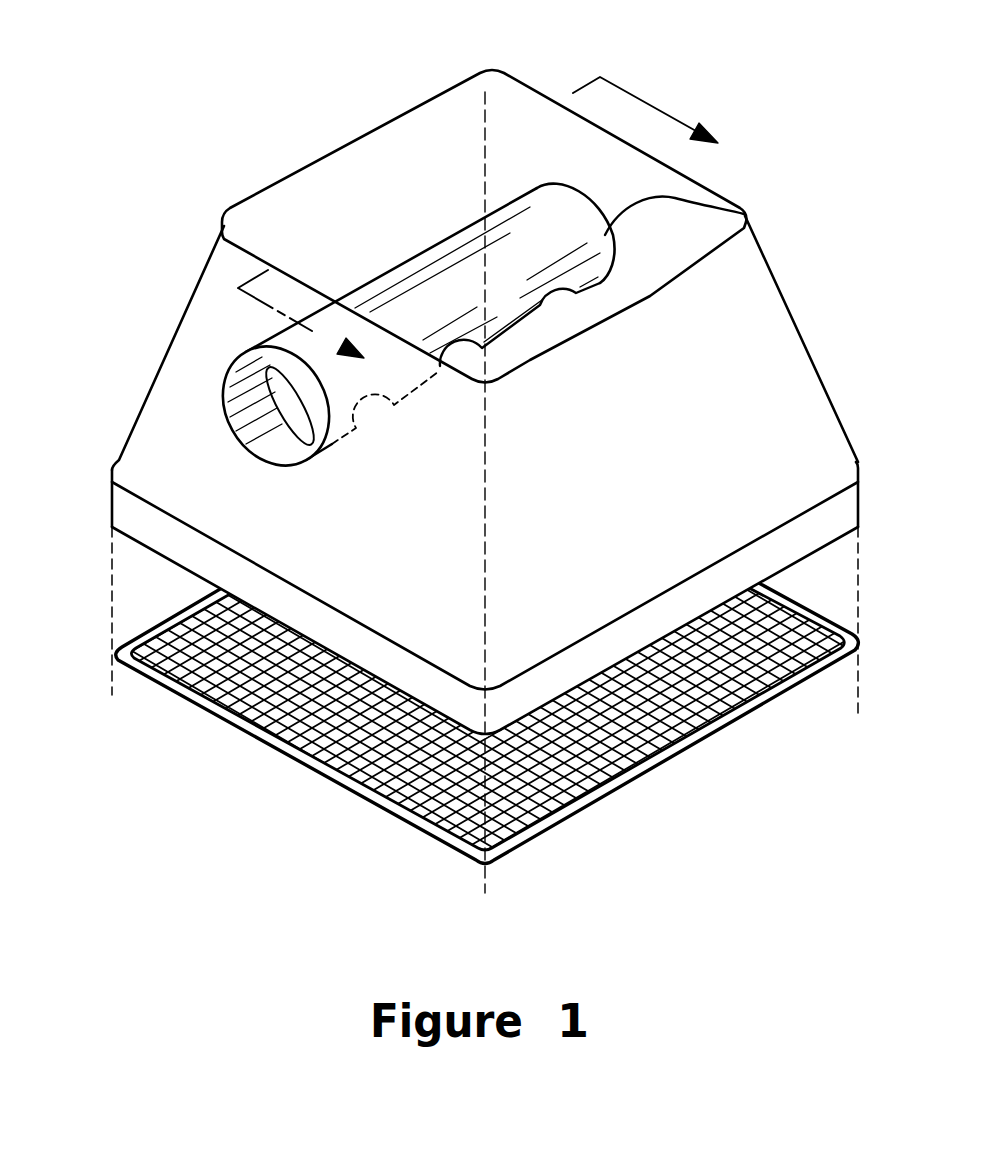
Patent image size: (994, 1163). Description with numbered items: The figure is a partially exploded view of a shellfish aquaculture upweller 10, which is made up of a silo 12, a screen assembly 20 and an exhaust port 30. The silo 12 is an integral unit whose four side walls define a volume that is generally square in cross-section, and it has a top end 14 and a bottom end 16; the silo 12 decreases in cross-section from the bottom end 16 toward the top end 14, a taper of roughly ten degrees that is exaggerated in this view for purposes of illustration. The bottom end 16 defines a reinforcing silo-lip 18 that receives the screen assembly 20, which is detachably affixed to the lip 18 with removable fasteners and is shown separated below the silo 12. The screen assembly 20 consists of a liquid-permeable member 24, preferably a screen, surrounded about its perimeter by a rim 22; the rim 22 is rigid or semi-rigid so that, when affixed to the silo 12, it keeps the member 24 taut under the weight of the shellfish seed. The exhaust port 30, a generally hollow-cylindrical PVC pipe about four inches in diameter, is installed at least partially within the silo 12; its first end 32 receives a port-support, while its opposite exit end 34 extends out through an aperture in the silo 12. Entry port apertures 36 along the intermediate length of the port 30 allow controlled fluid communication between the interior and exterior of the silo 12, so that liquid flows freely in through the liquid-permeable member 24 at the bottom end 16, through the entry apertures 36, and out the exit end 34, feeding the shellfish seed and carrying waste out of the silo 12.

The shellfish aquaculture upweller 10 is at (470, 460).
The silo 12 is at (470, 383).
The top end 14 is at (415, 130).
The bottom end 16 is at (137, 547).
The reinforcing silo-lip 18 is at (838, 517).
The screen assembly 20 is at (457, 650).
The rim 22 is at (167, 693).
The liquid-permeable member 24 is at (273, 754).
The exhaust port 30 is at (357, 322).
The first end 32 is at (744, 213).
The exit end 34 is at (223, 383).
The entry port apertures 36 is at (467, 355).